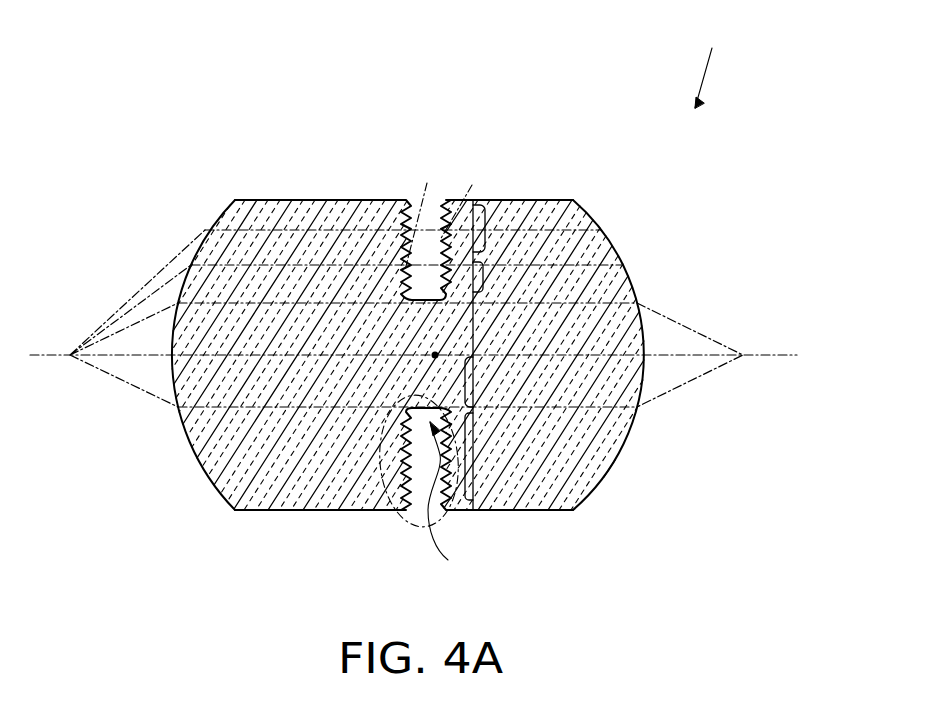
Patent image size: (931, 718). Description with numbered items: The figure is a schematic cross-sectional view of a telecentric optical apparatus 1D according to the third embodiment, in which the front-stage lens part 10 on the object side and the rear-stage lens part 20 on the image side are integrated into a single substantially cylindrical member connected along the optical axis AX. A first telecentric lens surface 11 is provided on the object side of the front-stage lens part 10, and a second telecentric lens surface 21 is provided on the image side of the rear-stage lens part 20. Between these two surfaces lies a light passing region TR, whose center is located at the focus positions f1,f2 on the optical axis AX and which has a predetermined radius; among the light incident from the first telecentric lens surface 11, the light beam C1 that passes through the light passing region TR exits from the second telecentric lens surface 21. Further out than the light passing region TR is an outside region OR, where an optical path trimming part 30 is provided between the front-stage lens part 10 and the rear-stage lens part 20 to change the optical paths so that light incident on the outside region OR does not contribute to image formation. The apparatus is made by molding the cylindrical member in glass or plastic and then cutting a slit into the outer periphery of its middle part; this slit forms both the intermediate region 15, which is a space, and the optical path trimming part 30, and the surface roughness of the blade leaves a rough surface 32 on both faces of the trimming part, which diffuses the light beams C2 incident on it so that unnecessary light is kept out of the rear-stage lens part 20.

The front-stage lens part 10 is at (335, 341).
The rear-stage lens part 20 is at (508, 333).
The first telecentric lens surface 11 is at (188, 448).
The second telecentric lens surface 21 is at (625, 457).
The intermediate region 15 is at (465, 500).
The optical path trimming part 30 is at (398, 523).
The rough surface 32 is at (454, 500).
The telecentric optical apparatus 1D is at (721, 65).
The light beam C1 is at (707, 330).
The light beams C2 is at (427, 183).
The outside region OR is at (478, 252).
The light passing region TR is at (482, 355).
The optical axis AX is at (760, 352).
The focus positions f1,f2 is at (436, 355).